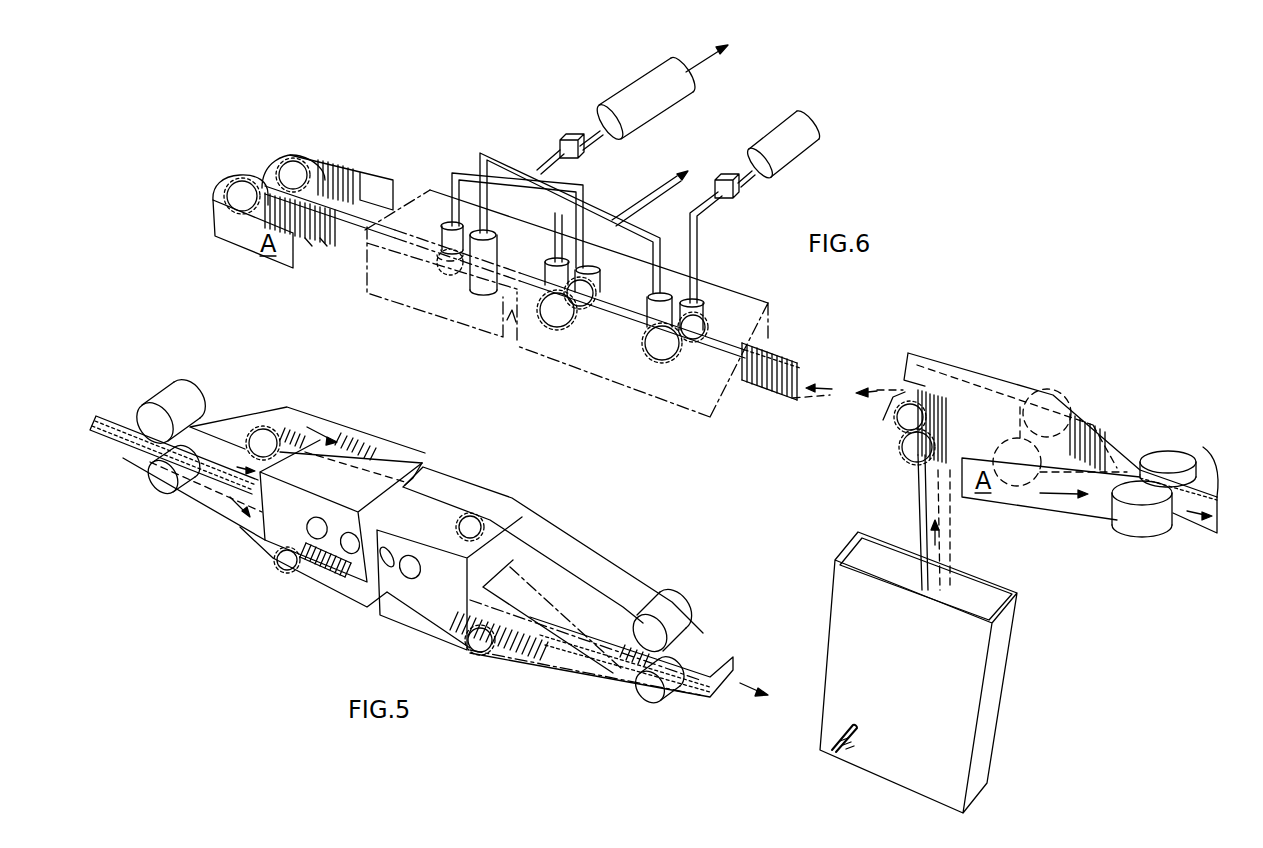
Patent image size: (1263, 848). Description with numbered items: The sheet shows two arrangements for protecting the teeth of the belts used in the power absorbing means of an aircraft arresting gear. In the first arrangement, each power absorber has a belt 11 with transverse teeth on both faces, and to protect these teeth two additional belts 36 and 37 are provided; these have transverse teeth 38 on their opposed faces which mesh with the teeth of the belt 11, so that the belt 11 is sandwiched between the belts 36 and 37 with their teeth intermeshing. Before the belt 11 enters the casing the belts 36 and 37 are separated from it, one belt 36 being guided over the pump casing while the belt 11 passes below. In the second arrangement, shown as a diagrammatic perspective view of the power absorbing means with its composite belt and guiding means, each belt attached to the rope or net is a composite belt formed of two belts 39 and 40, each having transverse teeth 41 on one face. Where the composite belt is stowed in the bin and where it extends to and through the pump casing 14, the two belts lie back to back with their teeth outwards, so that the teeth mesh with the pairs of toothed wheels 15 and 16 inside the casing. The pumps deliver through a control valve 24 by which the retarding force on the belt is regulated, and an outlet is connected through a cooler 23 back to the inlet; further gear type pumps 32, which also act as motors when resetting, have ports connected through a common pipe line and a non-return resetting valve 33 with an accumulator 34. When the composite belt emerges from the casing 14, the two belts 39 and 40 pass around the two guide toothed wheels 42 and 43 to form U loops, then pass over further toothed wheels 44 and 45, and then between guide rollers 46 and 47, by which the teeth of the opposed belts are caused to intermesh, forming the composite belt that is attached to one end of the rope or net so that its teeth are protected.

In FIG. 5, the belt 11 is at (125, 451).
In FIG. 6, the pump casing 14 is at (432, 280).
In FIG. 5, the pump casing 14 is at (280, 530).
In FIG. 6, the toothed wheels 15 is at (588, 293).
In FIG. 6, the toothed wheels 16 is at (556, 320).
In FIG. 6, the cooler 23 is at (655, 100).
In FIG. 6, the control valve 24 is at (579, 152).
In FIG. 6, the gear type pumps 32 is at (700, 323).
In FIG. 6, the non-return resetting valve 33 is at (723, 178).
In FIG. 6, the accumulator 34 is at (790, 152).
In FIG. 5, the belt 36 is at (457, 480).
In FIG. 5, the belt 37 is at (318, 592).
In FIG. 5, the transverse teeth 38 is at (243, 430).
In FIG. 6, the belt 39 is at (375, 180).
In FIG. 6, the belt 40 is at (320, 237).
In FIG. 6, the transverse teeth 41 is at (350, 175).
In FIG. 6, the guide toothed wheel 42 is at (290, 172).
In FIG. 6, the guide toothed wheel 43 is at (240, 192).
In FIG. 6, the toothed wheel 44 is at (1062, 410).
In FIG. 6, the toothed wheel 45 is at (1020, 465).
In FIG. 6, the guide roller 46 is at (1152, 458).
In FIG. 6, the guide roller 47 is at (1143, 523).